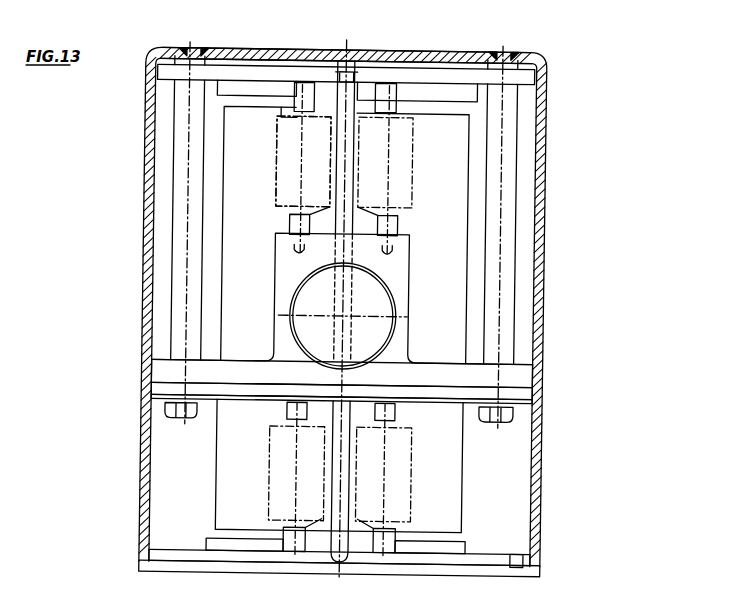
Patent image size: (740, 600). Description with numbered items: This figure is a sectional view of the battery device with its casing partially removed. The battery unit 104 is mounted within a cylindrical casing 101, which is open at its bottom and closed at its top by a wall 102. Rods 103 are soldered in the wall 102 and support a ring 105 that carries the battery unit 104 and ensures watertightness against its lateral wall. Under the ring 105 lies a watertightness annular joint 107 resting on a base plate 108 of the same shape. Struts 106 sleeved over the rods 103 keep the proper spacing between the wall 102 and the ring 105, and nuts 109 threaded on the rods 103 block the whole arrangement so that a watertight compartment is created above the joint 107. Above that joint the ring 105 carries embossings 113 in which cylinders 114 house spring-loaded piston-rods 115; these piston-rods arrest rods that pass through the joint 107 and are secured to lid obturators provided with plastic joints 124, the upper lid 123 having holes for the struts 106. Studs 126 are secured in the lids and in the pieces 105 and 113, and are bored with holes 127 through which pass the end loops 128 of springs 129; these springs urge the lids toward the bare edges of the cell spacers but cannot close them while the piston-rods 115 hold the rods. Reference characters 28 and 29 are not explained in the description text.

The cylindrical casing 101 is at (630, 170).
The wall 102 is at (443, 52).
The rods 103 is at (189, 50).
The battery unit 104 is at (480, 201).
The ring 105 is at (165, 371).
The struts 106 is at (182, 203).
The watertightness annular joint 107 is at (168, 391).
The base plate 108 is at (167, 399).
The nuts 109 is at (170, 412).
The embossings 113 is at (412, 259).
The cylinders 114 is at (398, 306).
The piston-rods 115 is at (376, 332).
The upper lid 123 is at (523, 572).
The plastic joints 124 is at (457, 554).
The studs 126 is at (391, 106).
The holes 127 is at (389, 101).
The end loops 128 is at (382, 536).
The springs 129 is at (407, 512).
The bracket 28 is at (305, 103).
The phantom plate 29 is at (298, 157).